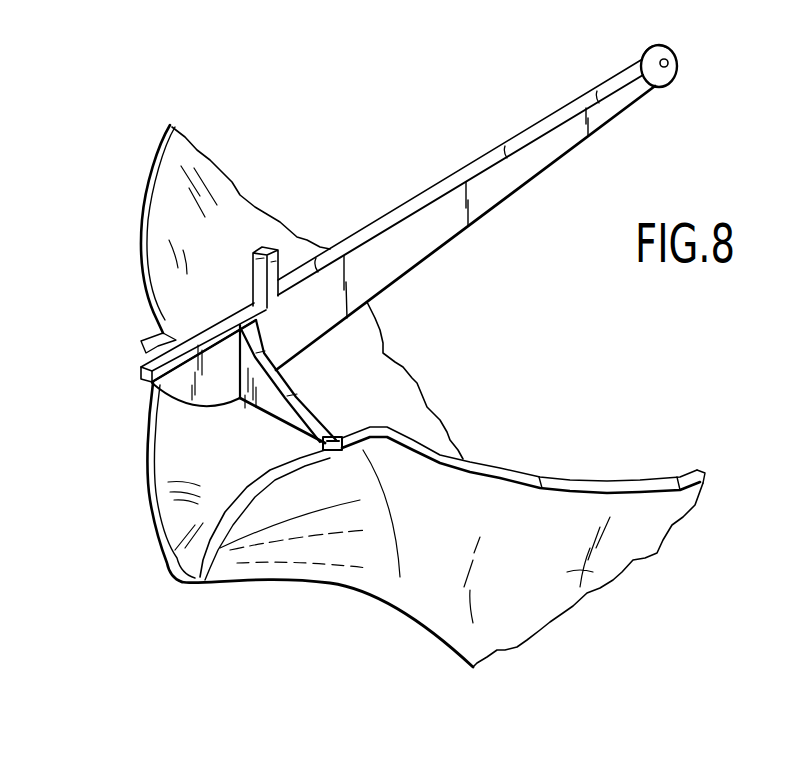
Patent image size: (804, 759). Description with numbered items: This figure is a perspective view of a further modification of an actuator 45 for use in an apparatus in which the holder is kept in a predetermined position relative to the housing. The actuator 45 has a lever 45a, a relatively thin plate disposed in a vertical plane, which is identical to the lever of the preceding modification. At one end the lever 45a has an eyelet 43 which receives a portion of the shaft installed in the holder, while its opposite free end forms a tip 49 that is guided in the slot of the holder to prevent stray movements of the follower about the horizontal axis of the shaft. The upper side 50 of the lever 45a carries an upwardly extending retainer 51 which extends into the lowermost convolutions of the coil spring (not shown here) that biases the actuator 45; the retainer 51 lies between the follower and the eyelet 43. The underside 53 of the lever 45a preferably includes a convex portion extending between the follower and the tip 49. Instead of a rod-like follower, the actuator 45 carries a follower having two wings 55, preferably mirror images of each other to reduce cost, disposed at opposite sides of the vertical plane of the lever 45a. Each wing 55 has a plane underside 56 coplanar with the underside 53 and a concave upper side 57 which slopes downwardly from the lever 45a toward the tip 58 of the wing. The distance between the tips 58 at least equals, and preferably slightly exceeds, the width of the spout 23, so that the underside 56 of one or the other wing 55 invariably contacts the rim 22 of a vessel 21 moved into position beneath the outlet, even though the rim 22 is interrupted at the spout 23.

The vessel 21 is at (603, 577).
The rim 22 is at (658, 481).
The spout 23 is at (230, 562).
The eyelet 43 is at (677, 64).
The actuator 45 is at (506, 207).
The lever 45a is at (498, 183).
The tip 49 is at (140, 379).
The upper side 50 is at (475, 163).
The retainer 51 is at (285, 257).
The underside 53 is at (415, 272).
The wing 55 is at (312, 396).
The underside 56 is at (274, 413).
The upper side 57 is at (311, 420).
The tip 58 is at (341, 452).